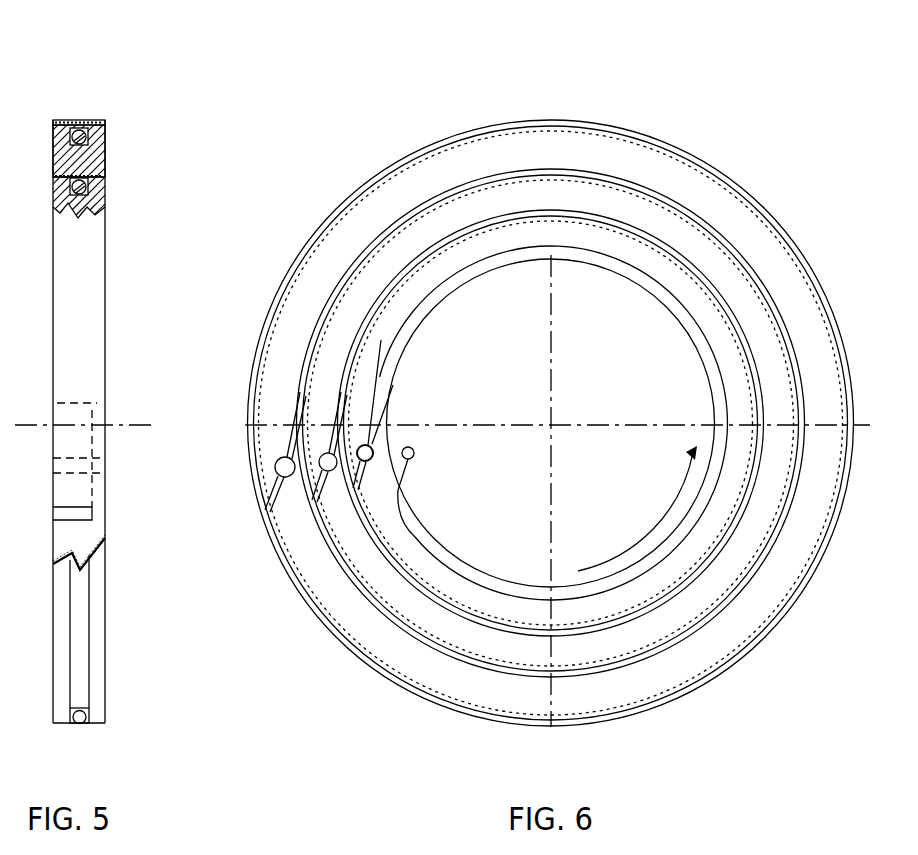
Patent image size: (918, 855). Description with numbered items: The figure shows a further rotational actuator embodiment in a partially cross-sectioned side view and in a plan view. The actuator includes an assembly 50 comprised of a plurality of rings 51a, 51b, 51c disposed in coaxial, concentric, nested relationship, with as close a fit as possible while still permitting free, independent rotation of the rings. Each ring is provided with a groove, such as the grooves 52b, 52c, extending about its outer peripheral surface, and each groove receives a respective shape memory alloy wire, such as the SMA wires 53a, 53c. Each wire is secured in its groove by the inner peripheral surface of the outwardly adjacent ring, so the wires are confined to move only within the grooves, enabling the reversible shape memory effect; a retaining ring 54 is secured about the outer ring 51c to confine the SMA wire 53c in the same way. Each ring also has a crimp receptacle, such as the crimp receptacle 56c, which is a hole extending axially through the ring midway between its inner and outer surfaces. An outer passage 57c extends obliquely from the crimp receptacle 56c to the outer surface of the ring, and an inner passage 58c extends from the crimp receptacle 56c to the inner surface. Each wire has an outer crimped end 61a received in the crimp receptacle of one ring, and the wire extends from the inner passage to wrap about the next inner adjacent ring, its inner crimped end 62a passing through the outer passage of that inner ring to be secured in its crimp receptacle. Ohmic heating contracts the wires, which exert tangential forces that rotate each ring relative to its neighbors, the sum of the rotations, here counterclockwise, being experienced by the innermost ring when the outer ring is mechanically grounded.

In FIG. 6, the assembly 50 is at (503, 108).
In FIG. 6, the ring 51a is at (599, 233).
In FIG. 5, the ring 51b is at (108, 192).
In FIG. 6, the ring 51b is at (655, 216).
In FIG. 5, the outer ring 51c is at (108, 157).
In FIG. 6, the outer ring 51c is at (730, 216).
In FIG. 5, the groove 52b is at (92, 212).
In FIG. 5, the groove 52c is at (108, 160).
In FIG. 6, the SMA wire 53a is at (445, 298).
In FIG. 5, the SMA wire 53c is at (87, 119).
In FIG. 5, the retaining ring 54 is at (101, 120).
In FIG. 6, the retaining ring 54 is at (412, 158).
In FIG. 6, the crimp receptacle 56c is at (276, 465).
In FIG. 6, the outer passage 57c is at (268, 487).
In FIG. 6, the inner passage 58c is at (297, 448).
In FIG. 6, the outer crimped end 61a is at (372, 450).
In FIG. 6, the inner crimped end 62a is at (414, 455).